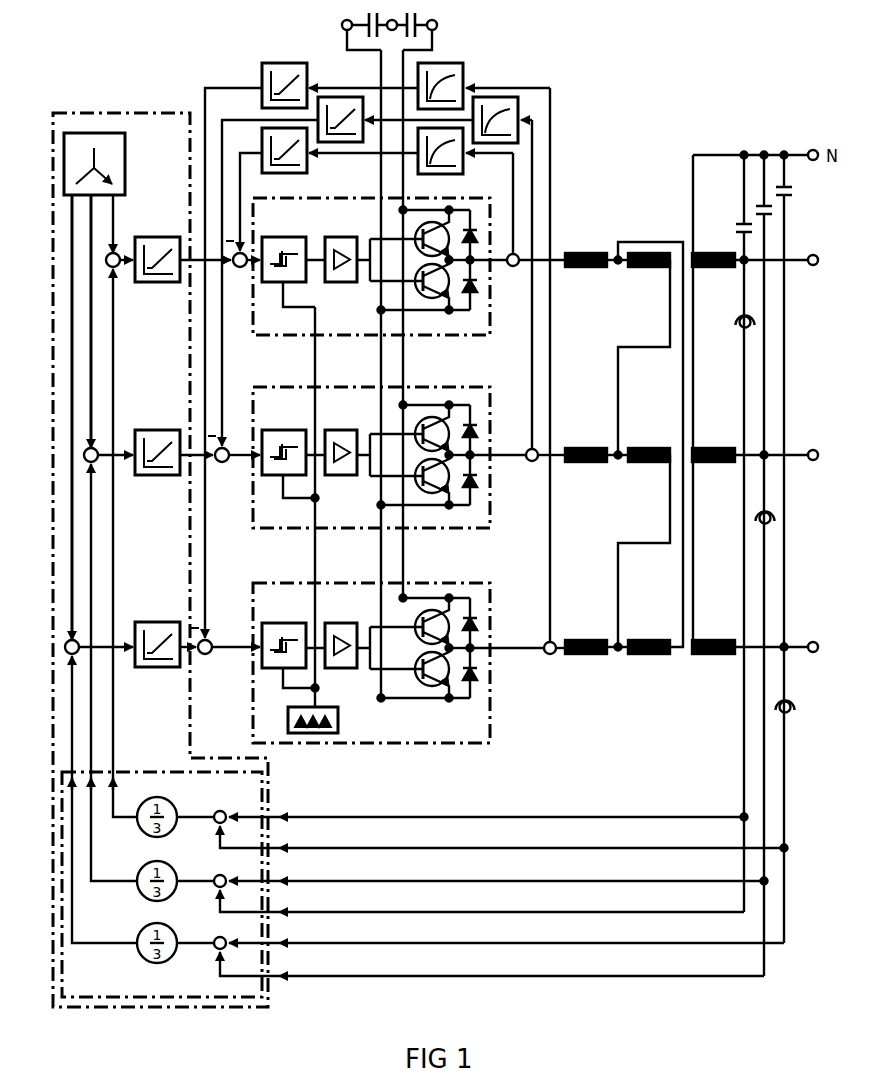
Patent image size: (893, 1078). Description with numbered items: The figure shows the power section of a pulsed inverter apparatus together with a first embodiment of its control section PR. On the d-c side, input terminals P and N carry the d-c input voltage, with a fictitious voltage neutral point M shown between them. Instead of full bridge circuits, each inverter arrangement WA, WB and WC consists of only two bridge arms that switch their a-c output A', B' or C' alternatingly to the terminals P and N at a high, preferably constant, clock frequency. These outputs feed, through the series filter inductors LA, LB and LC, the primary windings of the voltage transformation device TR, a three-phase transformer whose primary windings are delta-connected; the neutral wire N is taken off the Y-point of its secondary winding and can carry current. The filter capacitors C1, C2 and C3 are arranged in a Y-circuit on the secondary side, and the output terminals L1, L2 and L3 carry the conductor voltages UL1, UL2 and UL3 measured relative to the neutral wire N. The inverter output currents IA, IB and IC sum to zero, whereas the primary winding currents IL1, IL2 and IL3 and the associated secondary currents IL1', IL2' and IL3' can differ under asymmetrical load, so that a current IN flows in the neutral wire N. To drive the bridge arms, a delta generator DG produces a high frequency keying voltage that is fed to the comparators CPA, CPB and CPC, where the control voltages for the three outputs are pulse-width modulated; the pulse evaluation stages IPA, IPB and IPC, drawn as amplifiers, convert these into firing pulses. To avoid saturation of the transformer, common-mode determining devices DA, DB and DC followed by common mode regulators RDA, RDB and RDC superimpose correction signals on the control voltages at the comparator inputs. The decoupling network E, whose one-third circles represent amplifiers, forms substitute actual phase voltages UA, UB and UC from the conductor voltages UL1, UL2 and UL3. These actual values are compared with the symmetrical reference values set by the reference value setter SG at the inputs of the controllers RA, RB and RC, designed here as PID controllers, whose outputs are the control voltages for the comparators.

The reference value setter SG is at (125, 148).
The controller RA is at (152, 236).
The controller RB is at (154, 429).
The controller RC is at (154, 621).
The common mode regulator RDA is at (321, 188).
The common mode regulator RDB is at (368, 143).
The common mode regulator RDC is at (260, 76).
The common-mode determining device DA is at (463, 171).
The common-mode determining device DB is at (505, 96).
The common-mode determining device DC is at (463, 71).
The comparator CPA is at (302, 232).
The comparator CPB is at (302, 425).
The comparator CPC is at (302, 618).
The pulse evaluation stage IPA is at (330, 222).
The pulse evaluation stage IPB is at (362, 425).
The pulse evaluation stage IPC is at (362, 618).
The inverter arrangement WA is at (290, 348).
The inverter arrangement WB is at (300, 530).
The inverter arrangement WC is at (352, 745).
The delta generator DG is at (338, 718).
The decoupling network E is at (158, 768).
The control section PR is at (165, 1008).
The inductor LA is at (584, 252).
The inductor LB is at (584, 447).
The inductor LC is at (584, 639).
The output current IA is at (598, 277).
The output current IB is at (598, 472).
The output current IC is at (598, 664).
The secondary winding current IL1' is at (644, 354).
The secondary winding current IL2' is at (644, 547).
The secondary winding current IL3' is at (650, 467).
The primary winding current IL1 is at (750, 279).
The primary winding current IL2 is at (750, 474).
The primary winding current IL3 is at (750, 666).
The voltage transformation device TR is at (713, 442).
The neutral wire current IN is at (732, 147).
The capacitor C1 is at (742, 226).
The capacitor C2 is at (760, 205).
The capacitor C3 is at (788, 196).
The output terminal L1 is at (826, 261).
The output terminal L2 is at (826, 456).
The output terminal L3 is at (826, 648).
The neutral wire N is at (353, 33).
The fictitious voltage neutral point M is at (389, 18).
The input terminal P is at (427, 33).
The primary a-c voltage terminal A' is at (517, 277).
The primary a-c voltage terminal B' is at (517, 443).
The primary a-c voltage terminal C' is at (517, 636).
The terminal voltage UA is at (164, 557).
The terminal voltage UB is at (158, 687).
The terminal voltage UC is at (149, 814).
The conductor voltage UL1 is at (440, 815).
The conductor voltage UL2 is at (440, 879).
The conductor voltage UL3 is at (440, 941).